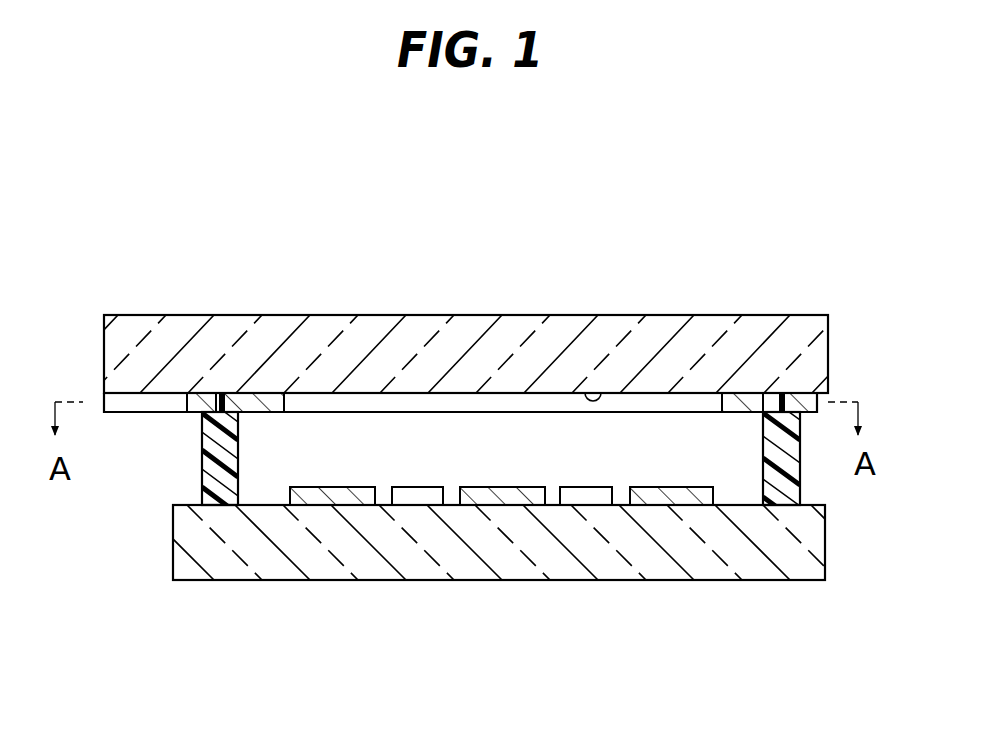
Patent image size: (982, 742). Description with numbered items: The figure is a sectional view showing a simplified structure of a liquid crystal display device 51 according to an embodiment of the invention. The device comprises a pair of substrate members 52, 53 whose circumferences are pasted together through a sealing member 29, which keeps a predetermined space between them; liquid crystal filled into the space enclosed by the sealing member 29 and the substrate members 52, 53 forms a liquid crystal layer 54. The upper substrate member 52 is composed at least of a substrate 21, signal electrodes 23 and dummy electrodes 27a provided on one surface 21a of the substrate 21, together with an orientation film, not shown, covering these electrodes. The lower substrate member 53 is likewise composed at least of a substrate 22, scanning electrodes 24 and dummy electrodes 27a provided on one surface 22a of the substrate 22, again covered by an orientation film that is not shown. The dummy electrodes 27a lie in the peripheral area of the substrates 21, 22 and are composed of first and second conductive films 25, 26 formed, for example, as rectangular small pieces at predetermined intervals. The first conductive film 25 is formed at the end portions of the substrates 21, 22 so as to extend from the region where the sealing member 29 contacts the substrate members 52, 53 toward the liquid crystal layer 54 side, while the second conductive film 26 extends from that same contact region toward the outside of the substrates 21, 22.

The liquid crystal display device 51 is at (724, 161).
The substrate member 52 is at (96, 317).
The substrate member 53 is at (101, 493).
The substrate 21 is at (700, 330).
The one surface 21a is at (595, 392).
The substrate 22 is at (656, 572).
The one surface 22a is at (264, 504).
The signal electrodes 23 is at (512, 405).
The scanning electrodes 24 is at (355, 492).
The first conductive film 25 is at (265, 400).
The second conductive film 26 is at (197, 393).
The dummy electrodes 27a is at (295, 258).
The sealing member 29 is at (208, 465).
The liquid crystal layer 54 is at (338, 427).